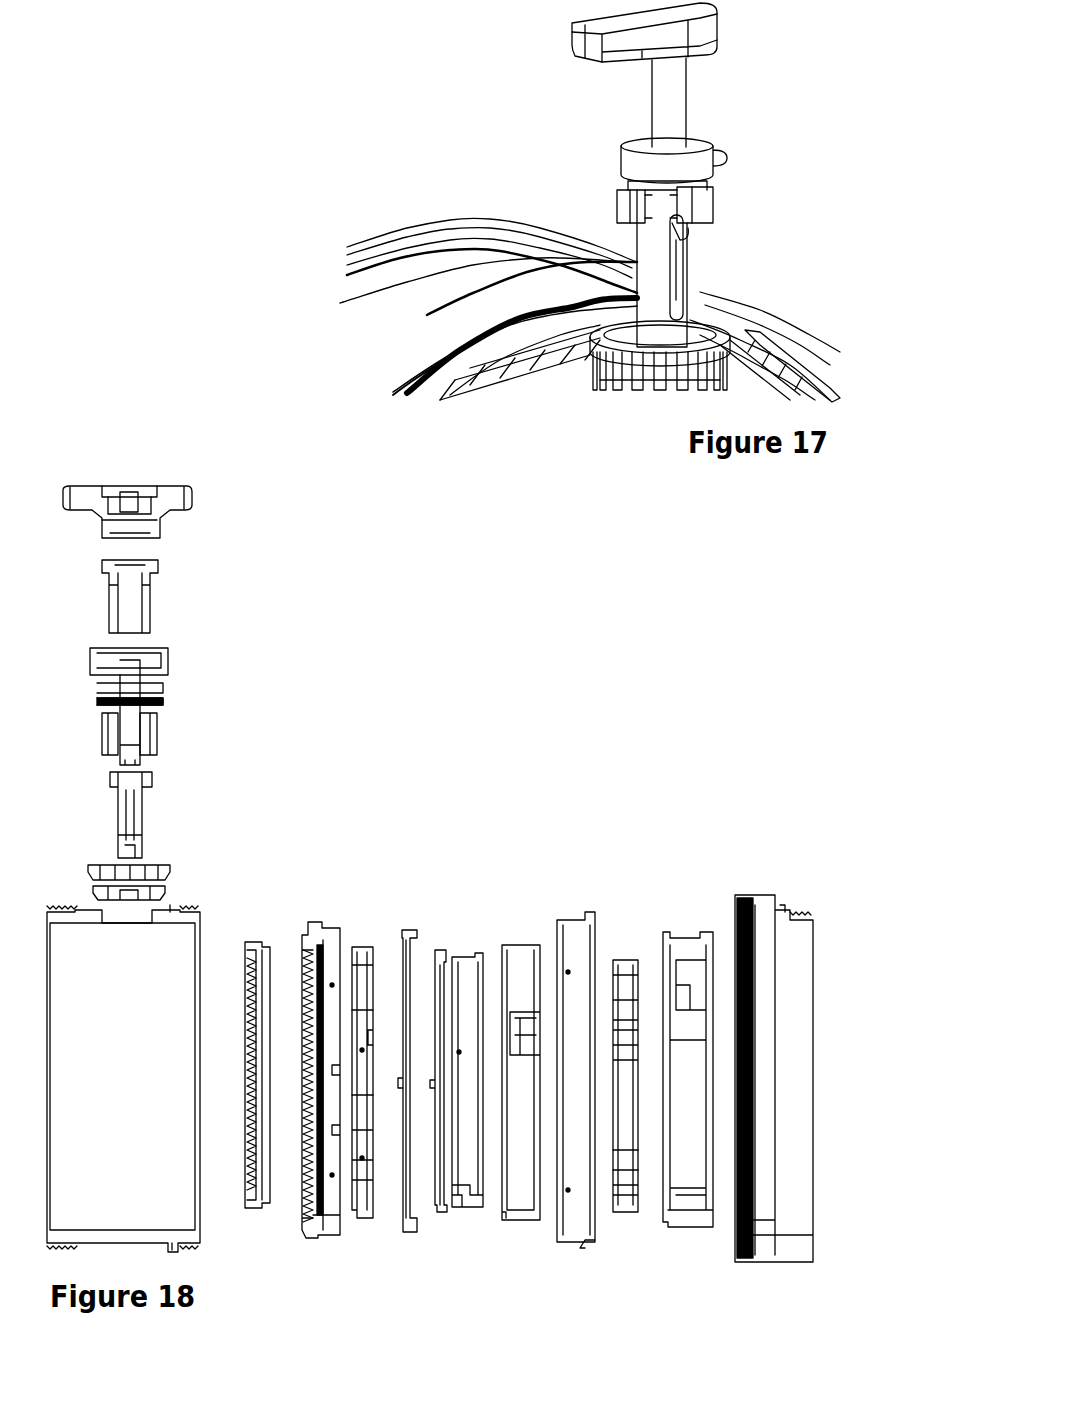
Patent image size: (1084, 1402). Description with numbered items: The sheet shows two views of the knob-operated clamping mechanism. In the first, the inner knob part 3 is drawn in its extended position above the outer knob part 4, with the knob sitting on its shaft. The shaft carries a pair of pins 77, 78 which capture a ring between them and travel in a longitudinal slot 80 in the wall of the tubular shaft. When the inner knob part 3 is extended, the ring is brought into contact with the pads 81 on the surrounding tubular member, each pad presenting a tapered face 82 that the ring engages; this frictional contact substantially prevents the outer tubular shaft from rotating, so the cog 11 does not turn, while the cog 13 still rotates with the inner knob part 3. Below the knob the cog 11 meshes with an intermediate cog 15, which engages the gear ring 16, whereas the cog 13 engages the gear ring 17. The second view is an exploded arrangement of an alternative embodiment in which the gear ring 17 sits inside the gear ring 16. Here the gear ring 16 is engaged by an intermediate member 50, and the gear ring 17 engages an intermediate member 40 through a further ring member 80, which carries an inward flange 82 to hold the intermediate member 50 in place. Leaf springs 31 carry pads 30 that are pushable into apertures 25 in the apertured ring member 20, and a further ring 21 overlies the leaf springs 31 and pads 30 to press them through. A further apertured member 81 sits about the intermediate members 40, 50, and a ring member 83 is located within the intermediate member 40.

In FIG. 17, the inner knob part 3 is at (600, 65).
In FIG. 18, the inner knob part 3 is at (143, 484).
In FIG. 18, the outer knob part 4 is at (192, 496).
In FIG. 17, the cog 11 is at (586, 386).
In FIG. 18, the cog 11 is at (162, 862).
In FIG. 17, the cog 13 is at (632, 392).
In FIG. 18, the cog 13 is at (170, 886).
In FIG. 17, the intermediate cog 15 is at (768, 362).
In FIG. 17, the gear ring 16 is at (492, 380).
In FIG. 18, the gear ring 16 is at (304, 918).
In FIG. 18, the gear ring 17 is at (250, 938).
In FIG. 18, the apertured ring member 20 is at (685, 1224).
In FIG. 18, the further ring 21 is at (526, 940).
In FIG. 18, the apertures 25 is at (690, 1025).
In FIG. 18, the pads 30 is at (622, 1020).
In FIG. 18, the leaf springs 31 is at (628, 1158).
In FIG. 18, the intermediate member 40 is at (441, 945).
In FIG. 18, the intermediate member 50 is at (405, 926).
In FIG. 17, the pin 77 is at (690, 186).
In FIG. 18, the pin 77 is at (129, 676).
In FIG. 17, the pin 78 is at (690, 238).
In FIG. 18, the pin 78 is at (131, 815).
In FIG. 17, the longitudinal slot 80 is at (685, 275).
In FIG. 18, the longitudinal slot 80 is at (364, 938).
In FIG. 17, the pads 81 is at (622, 213).
In FIG. 18, the pads 81 is at (572, 916).
In FIG. 18, the tapered face 82 is at (366, 941).
In FIG. 18, the ring member 83 is at (466, 951).